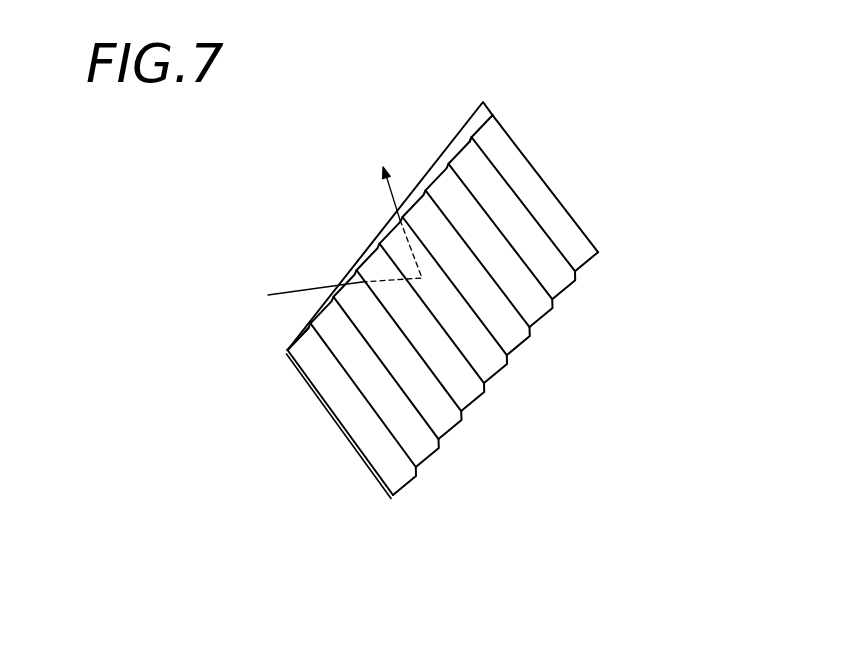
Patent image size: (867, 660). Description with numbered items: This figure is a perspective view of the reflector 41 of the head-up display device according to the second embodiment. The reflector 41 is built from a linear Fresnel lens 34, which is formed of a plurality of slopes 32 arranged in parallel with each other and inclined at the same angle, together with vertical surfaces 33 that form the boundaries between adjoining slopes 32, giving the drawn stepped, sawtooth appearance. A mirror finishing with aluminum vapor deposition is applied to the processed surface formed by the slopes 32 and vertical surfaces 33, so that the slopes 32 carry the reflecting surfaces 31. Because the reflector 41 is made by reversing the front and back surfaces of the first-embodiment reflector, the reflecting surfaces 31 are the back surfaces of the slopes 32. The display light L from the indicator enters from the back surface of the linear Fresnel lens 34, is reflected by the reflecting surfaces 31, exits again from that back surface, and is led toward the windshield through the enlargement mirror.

The reflecting surface 31 is at (440, 166).
The slope 32 is at (443, 418).
The vertical surface 33 is at (472, 138).
The linear Fresnel lens 34 is at (293, 342).
The reflector 41 is at (352, 457).
The display light L is at (288, 292).